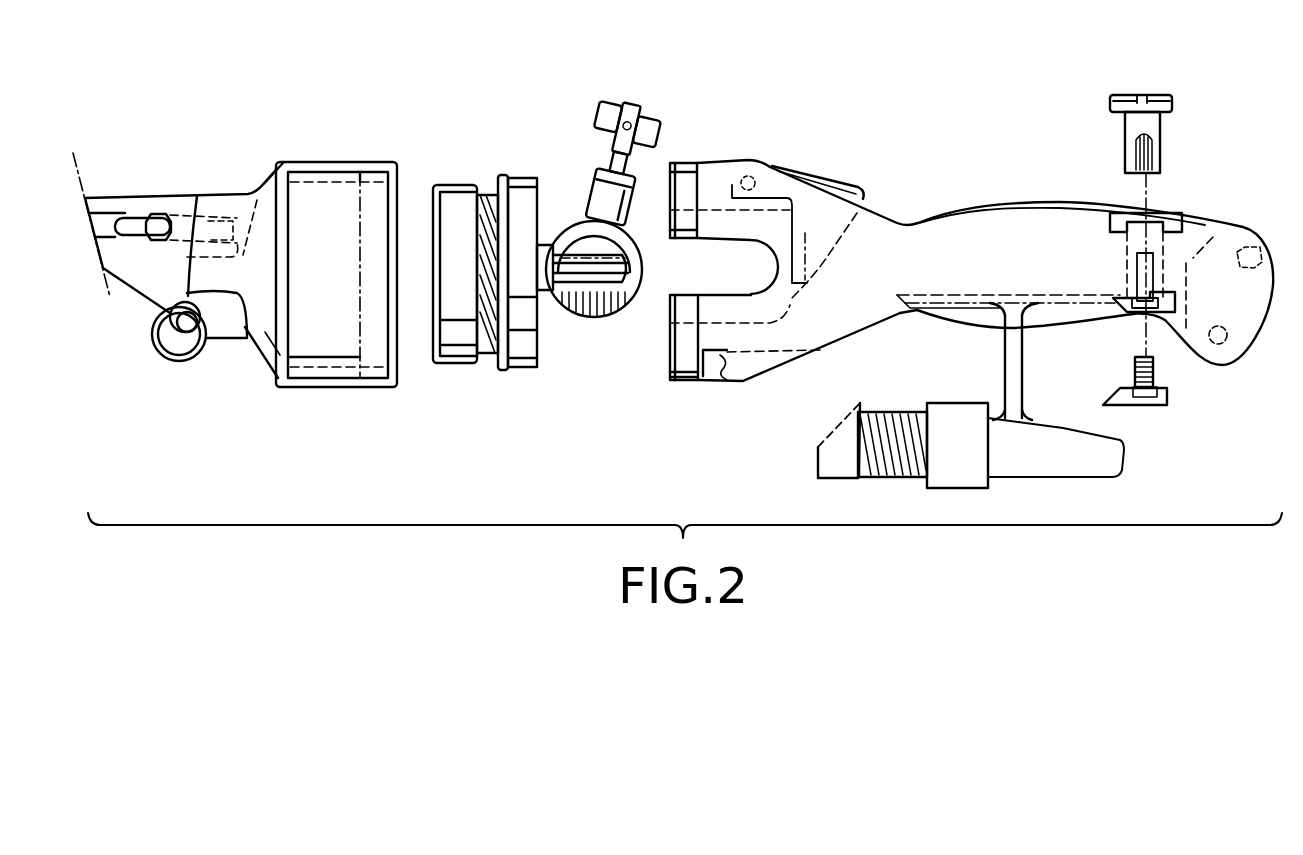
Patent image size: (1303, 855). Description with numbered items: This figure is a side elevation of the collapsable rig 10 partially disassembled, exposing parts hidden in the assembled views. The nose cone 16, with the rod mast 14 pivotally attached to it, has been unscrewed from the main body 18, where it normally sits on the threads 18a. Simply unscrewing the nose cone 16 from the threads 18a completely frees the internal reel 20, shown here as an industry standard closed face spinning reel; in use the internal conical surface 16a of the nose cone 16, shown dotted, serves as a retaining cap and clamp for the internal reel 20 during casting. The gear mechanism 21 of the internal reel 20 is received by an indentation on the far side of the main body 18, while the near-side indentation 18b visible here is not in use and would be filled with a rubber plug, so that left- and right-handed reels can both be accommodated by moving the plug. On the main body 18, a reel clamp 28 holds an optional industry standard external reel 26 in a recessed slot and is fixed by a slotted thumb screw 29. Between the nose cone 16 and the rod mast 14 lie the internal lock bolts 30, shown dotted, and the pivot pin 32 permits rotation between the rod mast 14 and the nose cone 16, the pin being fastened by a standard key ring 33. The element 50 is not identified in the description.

The collapsable rig 10 is at (395, 124).
The rod mast 14 is at (137, 191).
The nose cone 16 is at (348, 387).
The internal conical surface 16a is at (260, 350).
The main body 18 is at (1007, 203).
The threads 18a is at (690, 380).
The near-side indentation 18b is at (692, 278).
The internal reel 20 is at (527, 370).
The gear mechanism 21 is at (558, 232).
The external reel 26 is at (830, 468).
The reel clamp 28 is at (1130, 405).
The slotted thumb screw 29 is at (1120, 95).
The lock bolts 30 is at (210, 218).
The pivot pin 32 is at (162, 317).
The key ring 33 is at (160, 361).
The wedge insert 50 is at (840, 183).